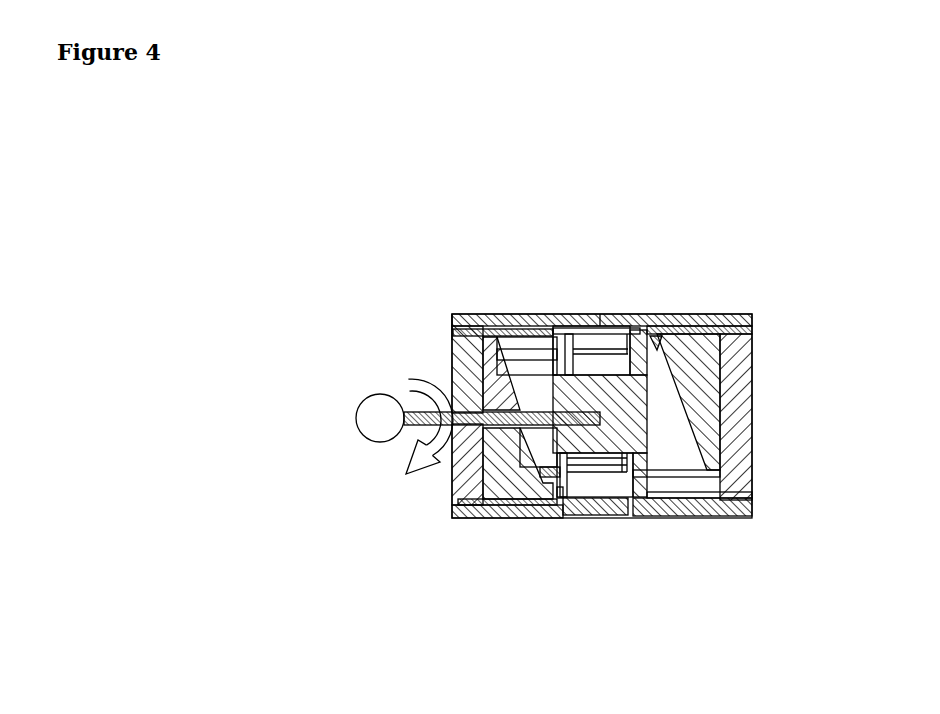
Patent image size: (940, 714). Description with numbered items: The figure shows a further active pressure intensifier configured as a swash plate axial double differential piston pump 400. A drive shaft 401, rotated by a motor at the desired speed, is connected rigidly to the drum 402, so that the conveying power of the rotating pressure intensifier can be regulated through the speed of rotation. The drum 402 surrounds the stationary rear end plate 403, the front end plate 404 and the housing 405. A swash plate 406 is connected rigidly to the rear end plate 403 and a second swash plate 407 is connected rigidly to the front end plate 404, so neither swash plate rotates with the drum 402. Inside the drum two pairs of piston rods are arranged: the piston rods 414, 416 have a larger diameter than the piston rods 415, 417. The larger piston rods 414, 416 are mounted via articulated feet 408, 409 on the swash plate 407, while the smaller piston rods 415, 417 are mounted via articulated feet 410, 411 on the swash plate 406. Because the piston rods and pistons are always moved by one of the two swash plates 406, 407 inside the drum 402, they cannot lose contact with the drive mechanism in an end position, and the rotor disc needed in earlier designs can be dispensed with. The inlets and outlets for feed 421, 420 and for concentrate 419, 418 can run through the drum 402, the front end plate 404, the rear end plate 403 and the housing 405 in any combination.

The swash plate axial double differential piston pump 400 is at (758, 527).
The drive shaft 401 is at (432, 413).
The drum 402 is at (650, 382).
The rear end plate 403 is at (754, 466).
The front end plate 404 is at (462, 518).
The housing 405 is at (531, 318).
The swash plate 406 is at (755, 418).
The swash plate 407 is at (453, 483).
The articulated foot 408 is at (498, 349).
The articulated foot 409 is at (530, 517).
The articulated foot 410 is at (734, 318).
The articulated foot 411 is at (709, 472).
The piston rod 414 is at (515, 329).
The piston rod 415 is at (606, 352).
The piston rod 416 is at (582, 505).
The piston rod 417 is at (673, 472).
The concentrate inlet/outlet 418 is at (750, 329).
The concentrate inlet/outlet 419 is at (755, 502).
The feed inlet/outlet 420 is at (450, 325).
The feed inlet/outlet 421 is at (455, 503).